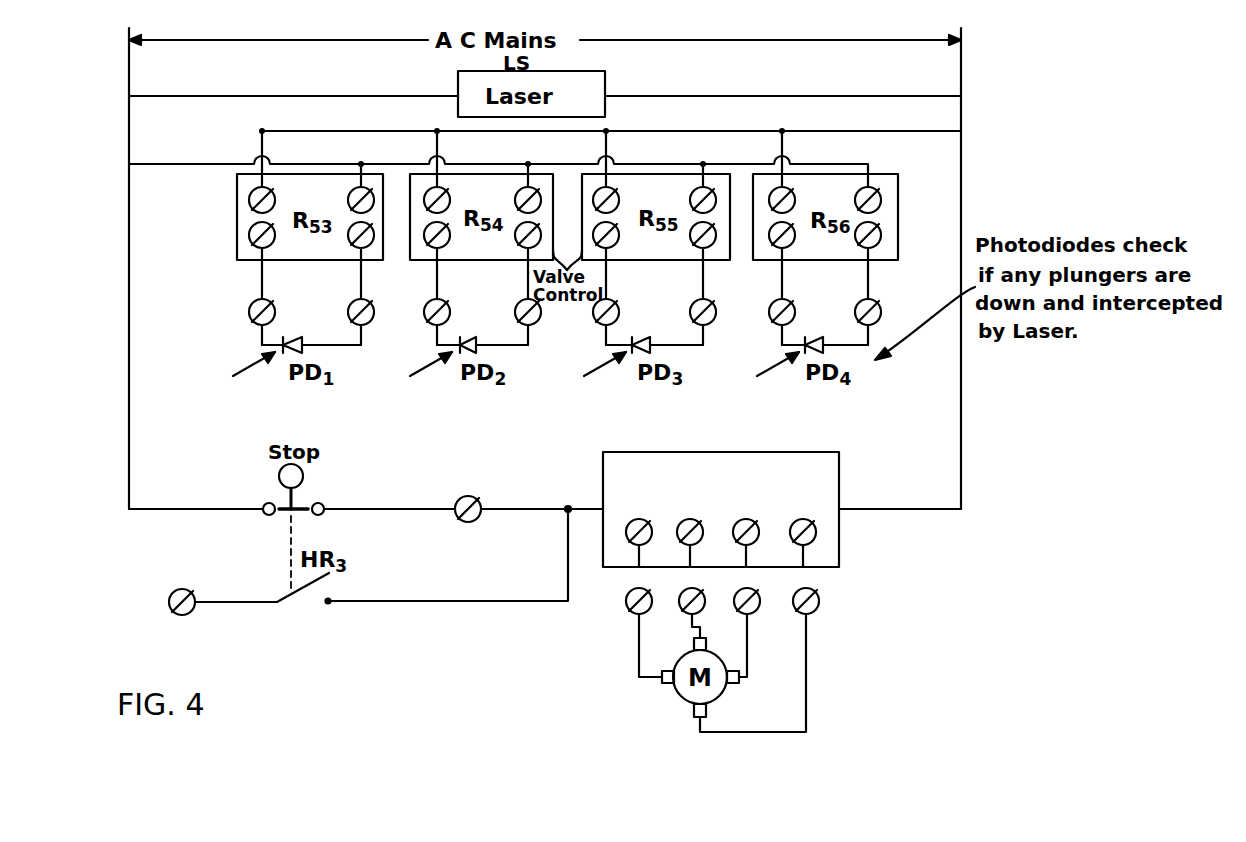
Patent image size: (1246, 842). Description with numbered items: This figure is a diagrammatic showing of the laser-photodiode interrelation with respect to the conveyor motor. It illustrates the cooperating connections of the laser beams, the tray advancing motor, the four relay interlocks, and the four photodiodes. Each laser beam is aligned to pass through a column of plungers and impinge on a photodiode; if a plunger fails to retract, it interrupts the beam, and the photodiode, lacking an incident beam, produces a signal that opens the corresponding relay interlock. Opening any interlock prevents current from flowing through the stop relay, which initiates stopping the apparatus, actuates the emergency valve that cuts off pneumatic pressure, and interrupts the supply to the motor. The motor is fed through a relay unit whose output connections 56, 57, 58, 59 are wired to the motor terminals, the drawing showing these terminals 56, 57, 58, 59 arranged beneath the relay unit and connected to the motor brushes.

The motor terminal 56 is at (652, 591).
The motor terminal 57 is at (706, 591).
The motor terminal 58 is at (761, 591).
The motor terminal 59 is at (819, 591).